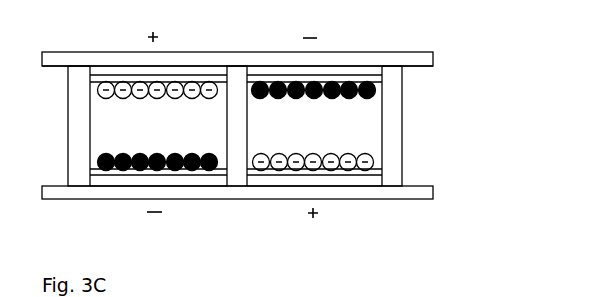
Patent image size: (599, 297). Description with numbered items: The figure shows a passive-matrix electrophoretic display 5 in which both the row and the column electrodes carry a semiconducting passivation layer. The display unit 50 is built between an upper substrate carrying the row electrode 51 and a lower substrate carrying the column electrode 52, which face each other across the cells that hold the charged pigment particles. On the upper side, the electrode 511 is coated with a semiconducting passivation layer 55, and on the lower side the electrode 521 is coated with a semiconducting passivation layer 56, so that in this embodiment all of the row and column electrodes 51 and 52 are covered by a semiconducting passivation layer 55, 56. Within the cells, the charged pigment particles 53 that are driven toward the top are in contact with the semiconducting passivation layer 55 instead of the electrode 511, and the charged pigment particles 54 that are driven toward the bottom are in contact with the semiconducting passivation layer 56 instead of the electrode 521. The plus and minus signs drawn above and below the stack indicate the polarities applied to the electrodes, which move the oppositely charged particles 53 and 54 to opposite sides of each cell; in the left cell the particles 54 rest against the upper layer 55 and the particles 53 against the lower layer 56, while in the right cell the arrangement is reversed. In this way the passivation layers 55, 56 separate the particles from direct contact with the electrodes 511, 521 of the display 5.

The display 5 is at (498, 135).
The electrophoretic display unit 50 is at (264, 123).
The row electrode 51 is at (254, 43).
The electrode 511 is at (342, 67).
The column electrode 52 is at (256, 198).
The electrode 521 is at (323, 181).
The charged pigment particles 53 is at (258, 82).
The charged pigment particles 54 is at (372, 163).
The semiconducting passivation layer 55 is at (373, 78).
The semiconducting passivation layer 56 is at (352, 172).